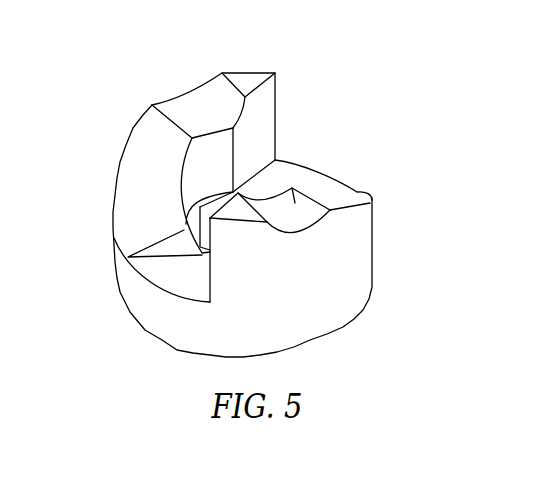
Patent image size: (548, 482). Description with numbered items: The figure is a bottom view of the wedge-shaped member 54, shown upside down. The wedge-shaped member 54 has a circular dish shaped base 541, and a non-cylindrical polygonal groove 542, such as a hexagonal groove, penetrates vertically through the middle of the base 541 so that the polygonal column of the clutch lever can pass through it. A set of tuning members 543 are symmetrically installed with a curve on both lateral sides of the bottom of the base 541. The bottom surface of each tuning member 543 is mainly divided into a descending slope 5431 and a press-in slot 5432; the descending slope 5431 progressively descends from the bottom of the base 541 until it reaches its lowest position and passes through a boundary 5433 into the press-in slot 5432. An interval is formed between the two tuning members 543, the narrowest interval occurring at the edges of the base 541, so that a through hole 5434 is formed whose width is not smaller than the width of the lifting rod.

The wedge-shaped member 54 is at (247, 197).
The circular dish shaped base 541 is at (168, 320).
The non-cylindrical polygonal groove 542 is at (201, 233).
The tuning member 543 is at (232, 157).
The descending slope 5431 is at (153, 210).
The press-in slot 5432 is at (222, 95).
The boundary 5433 is at (192, 118).
The through hole 5434 is at (173, 278).